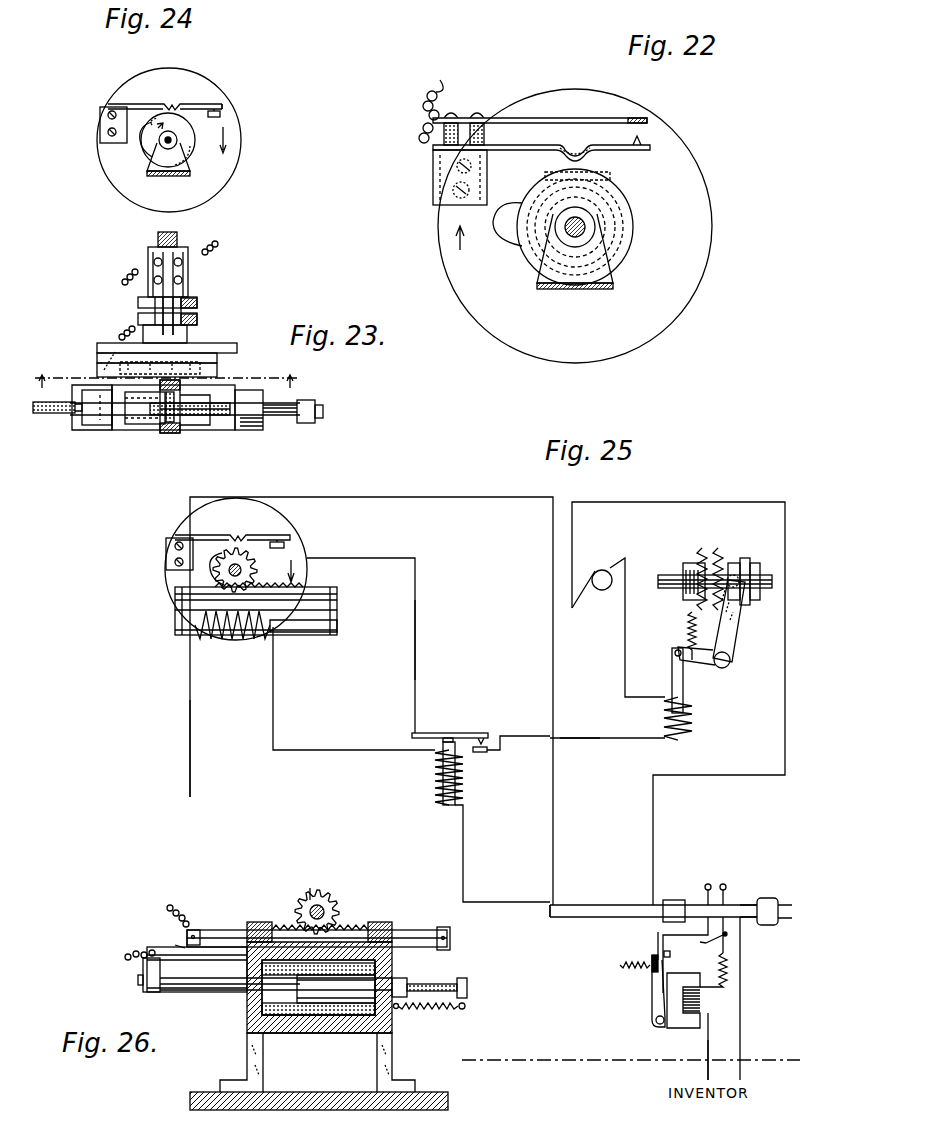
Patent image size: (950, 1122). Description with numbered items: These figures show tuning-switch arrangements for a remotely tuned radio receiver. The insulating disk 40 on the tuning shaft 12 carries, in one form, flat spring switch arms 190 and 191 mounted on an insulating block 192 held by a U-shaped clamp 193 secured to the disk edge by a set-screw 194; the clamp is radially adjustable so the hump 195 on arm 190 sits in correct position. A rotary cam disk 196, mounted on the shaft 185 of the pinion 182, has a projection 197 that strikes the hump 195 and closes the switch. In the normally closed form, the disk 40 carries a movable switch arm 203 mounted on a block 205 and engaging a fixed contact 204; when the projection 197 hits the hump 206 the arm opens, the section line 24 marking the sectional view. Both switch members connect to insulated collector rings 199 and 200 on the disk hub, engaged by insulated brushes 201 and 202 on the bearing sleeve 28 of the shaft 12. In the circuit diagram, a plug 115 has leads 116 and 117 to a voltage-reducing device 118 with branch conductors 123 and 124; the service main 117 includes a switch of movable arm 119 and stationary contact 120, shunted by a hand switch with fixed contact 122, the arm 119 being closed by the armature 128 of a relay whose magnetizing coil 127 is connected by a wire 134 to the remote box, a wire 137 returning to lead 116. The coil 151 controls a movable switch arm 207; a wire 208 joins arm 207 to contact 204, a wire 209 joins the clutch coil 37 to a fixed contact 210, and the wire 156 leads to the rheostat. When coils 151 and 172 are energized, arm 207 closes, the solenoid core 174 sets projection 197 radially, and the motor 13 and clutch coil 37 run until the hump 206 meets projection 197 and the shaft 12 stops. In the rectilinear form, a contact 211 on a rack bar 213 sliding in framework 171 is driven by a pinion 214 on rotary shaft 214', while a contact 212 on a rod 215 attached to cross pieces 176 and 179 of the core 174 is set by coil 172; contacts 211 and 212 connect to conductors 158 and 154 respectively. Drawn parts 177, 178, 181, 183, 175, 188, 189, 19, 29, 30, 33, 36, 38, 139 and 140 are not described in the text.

In FIG. 23, the tuning shaft 12 is at (158, 240).
In FIG. 23, the bearing sleeve 28 is at (148, 258).
In FIG. 23, the insulated brush 201 is at (138, 299).
In FIG. 23, the insulated brush 202 is at (186, 298).
In FIG. 23, the collector ring 199 is at (198, 303).
In FIG. 23, the collector ring 200 is at (198, 320).
In FIG. 24, the insulating disk 40 is at (240, 150).
In FIG. 22, the insulating disk 40 is at (712, 231).
In FIG. 23, the insulating disk 40 is at (236, 348).
In FIG. 25, the insulating disk 40 is at (294, 518).
In FIG. 24, the fixed contact 204 is at (212, 118).
In FIG. 23, the fixed contact 204 is at (217, 358).
In FIG. 24, the block 205 is at (100, 126).
In FIG. 23, the block 205 is at (97, 356).
In FIG. 25, the block 205 is at (168, 558).
In FIG. 24, the movable switch arm 203 is at (170, 103).
In FIG. 23, the movable switch arm 203 is at (202, 372).
In FIG. 25, the movable switch arm 203 is at (228, 535).
In FIG. 24, the hump 206 is at (175, 104).
In FIG. 25, the hump 206 is at (240, 536).
In FIG. 24, the cam disk 196 is at (192, 134).
In FIG. 22, the cam disk 196 is at (538, 272).
In FIG. 24, the shaft 185 is at (172, 142).
In FIG. 22, the shaft 185 is at (586, 227).
In FIG. 24, the pedestal 183 is at (188, 172).
In FIG. 22, the pedestal 183 is at (615, 285).
In FIG. 23, the pedestal 183 is at (190, 420).
In FIG. 24, the projection 197 is at (143, 137).
In FIG. 22, the projection 197 is at (500, 234).
In FIG. 25, the projection 197 is at (215, 562).
In FIG. 23, the section line 24 is at (167, 373).
In FIG. 25, the section line 24 is at (763, 565).
In FIG. 23, the threaded rod 177 is at (52, 412).
In FIG. 26, the threaded rod 177 is at (450, 984).
In FIG. 23, the end block 178 is at (80, 415).
In FIG. 23, the cross piece 176 is at (95, 415).
In FIG. 26, the cross piece 176 is at (393, 978).
In FIG. 23, the pinion 182 is at (165, 418).
In FIG. 25, the pinion 182 is at (224, 577).
In FIG. 23, the rack 181 is at (282, 415).
In FIG. 25, the rack 181 is at (322, 590).
In FIG. 23, the framework 171 is at (253, 418).
In FIG. 26, the framework 171 is at (393, 1057).
In FIG. 23, the cross piece 179 is at (308, 423).
In FIG. 26, the cross piece 179 is at (143, 972).
In FIG. 22, the switch arm 191 is at (565, 118).
In FIG. 22, the switch arm 190 is at (630, 151).
In FIG. 22, the hump 195 is at (578, 146).
In FIG. 22, the insulating block 192 is at (469, 122).
In FIG. 22, the U-shaped clamp 193 is at (433, 176).
In FIG. 22, the set-screw 194 is at (460, 196).
In FIG. 25, the wire 156 is at (190, 725).
In FIG. 25, the wire 208 is at (416, 622).
In FIG. 25, the wire 209 is at (580, 740).
In FIG. 25, the electric motor 13 is at (603, 588).
In FIG. 25, the solenoid coil 172 is at (216, 642).
In FIG. 26, the solenoid coil 172 is at (303, 1015).
In FIG. 25, the solenoid core 174 is at (312, 637).
In FIG. 26, the solenoid core 174 is at (197, 995).
In FIG. 25, the movable switch arm 207 is at (440, 733).
In FIG. 25, the fixed contact 210 is at (487, 750).
In FIG. 25, the coil 151 is at (464, 790).
In FIG. 25, the shaft 19 is at (668, 574).
In FIG. 25, the ratchet 29 is at (700, 553).
In FIG. 25, the ratchet 30 is at (718, 553).
In FIG. 25, the lever 33 is at (737, 640).
In FIG. 25, the spring 36 is at (688, 630).
In FIG. 25, the link 38 is at (684, 688).
In FIG. 25, the clutch coil 37 is at (694, 716).
In FIG. 25, the cord 139 is at (618, 905).
In FIG. 25, the wire 140 is at (558, 917).
In FIG. 25, the voltage-reducing device 118 is at (677, 900).
In FIG. 25, the branch conductor 124 is at (708, 884).
In FIG. 25, the branch conductor 123 is at (726, 884).
In FIG. 25, the lead 116 is at (745, 905).
In FIG. 25, the plug 115 is at (770, 898).
In FIG. 25, the wire 137 is at (742, 985).
In FIG. 25, the lead 117 is at (726, 940).
In FIG. 25, the fixed contact 122 is at (704, 943).
In FIG. 25, the movable arm 119 is at (655, 946).
In FIG. 25, the stationary contact 120 is at (670, 957).
In FIG. 25, the magnetizing coil 127 is at (702, 1003).
In FIG. 25, the armature 128 is at (651, 1006).
In FIG. 25, the wire 134 is at (707, 1048).
In FIG. 26, the core 175 is at (337, 1015).
In FIG. 26, the conductor 154 is at (143, 965).
In FIG. 26, the pin 189 is at (467, 992).
In FIG. 26, the spring 188 is at (450, 1008).
In FIG. 26, the contact 211 is at (210, 930).
In FIG. 26, the rack bar 213 is at (232, 928).
In FIG. 26, the contact 212 is at (170, 945).
In FIG. 26, the rod 215 is at (178, 945).
In FIG. 26, the conductor 158 is at (188, 912).
In FIG. 26, the pinion 214 is at (336, 909).
In FIG. 26, the rotary shaft 214' is at (313, 883).